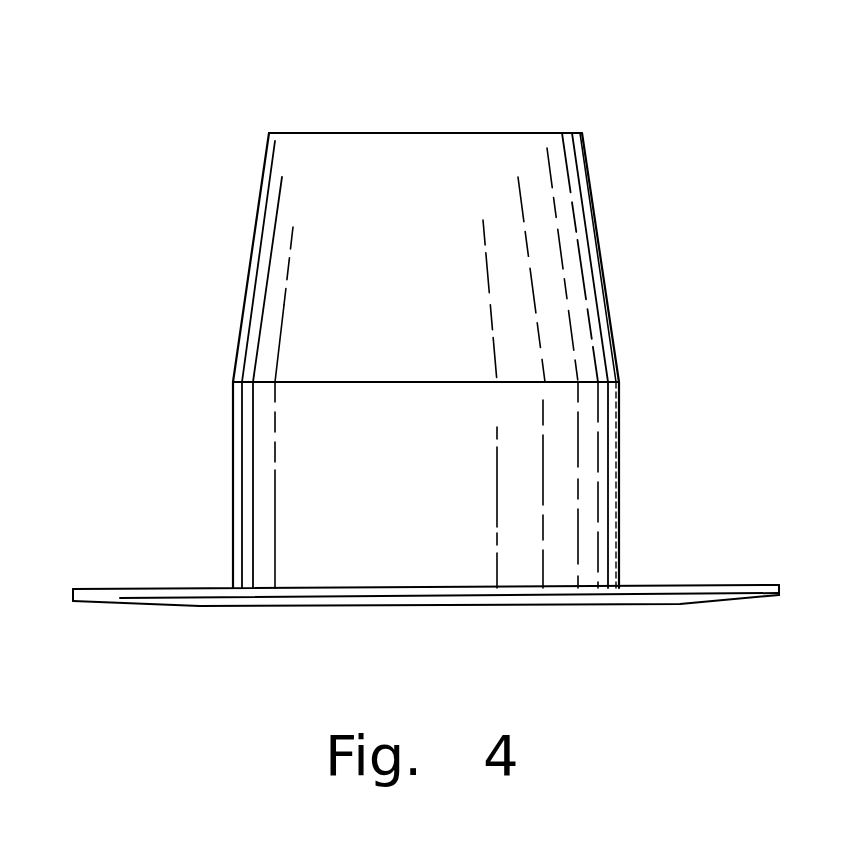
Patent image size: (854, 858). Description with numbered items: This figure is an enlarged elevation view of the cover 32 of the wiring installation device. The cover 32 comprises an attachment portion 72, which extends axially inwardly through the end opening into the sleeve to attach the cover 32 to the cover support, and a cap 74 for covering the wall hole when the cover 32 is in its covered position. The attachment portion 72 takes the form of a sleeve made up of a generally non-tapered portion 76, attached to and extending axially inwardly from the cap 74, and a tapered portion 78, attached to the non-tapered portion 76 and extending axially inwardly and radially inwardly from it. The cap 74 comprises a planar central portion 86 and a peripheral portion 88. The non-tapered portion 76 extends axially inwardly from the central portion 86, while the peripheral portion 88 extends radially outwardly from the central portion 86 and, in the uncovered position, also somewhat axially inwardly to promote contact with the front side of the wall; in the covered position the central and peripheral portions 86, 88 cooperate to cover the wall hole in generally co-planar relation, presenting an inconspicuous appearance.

The cover 32 is at (413, 339).
The attachment portion 72 is at (394, 257).
The cap 74 is at (413, 599).
The non-tapered portion 76 is at (241, 460).
The tapered portion 78 is at (260, 240).
The central portion 86 is at (378, 606).
The peripheral portion 88 is at (456, 592).